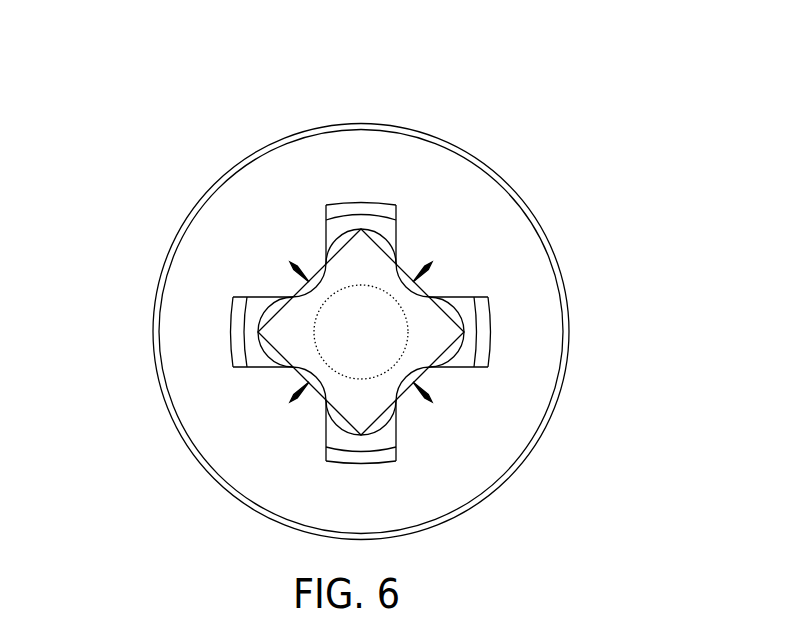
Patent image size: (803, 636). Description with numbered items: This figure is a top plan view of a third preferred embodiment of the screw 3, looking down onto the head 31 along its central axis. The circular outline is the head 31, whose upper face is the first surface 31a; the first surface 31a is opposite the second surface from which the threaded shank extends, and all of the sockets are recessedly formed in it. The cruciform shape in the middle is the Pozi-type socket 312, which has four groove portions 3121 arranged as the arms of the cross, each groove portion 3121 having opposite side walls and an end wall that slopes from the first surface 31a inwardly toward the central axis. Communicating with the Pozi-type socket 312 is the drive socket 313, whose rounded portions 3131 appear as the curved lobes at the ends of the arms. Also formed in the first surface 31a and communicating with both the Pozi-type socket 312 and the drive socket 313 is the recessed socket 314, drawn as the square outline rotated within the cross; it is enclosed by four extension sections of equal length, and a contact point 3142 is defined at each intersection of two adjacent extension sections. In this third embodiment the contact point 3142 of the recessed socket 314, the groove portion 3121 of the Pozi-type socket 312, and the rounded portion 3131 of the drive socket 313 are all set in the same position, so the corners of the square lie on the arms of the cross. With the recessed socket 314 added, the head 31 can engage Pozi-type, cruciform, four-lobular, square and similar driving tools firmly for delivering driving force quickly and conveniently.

The screw 3 is at (240, 118).
The head 31 is at (212, 182).
The first surface 31a is at (213, 257).
The Pozi-type socket 312 is at (373, 200).
The groove portion 3121 is at (490, 332).
The drive socket 313 is at (383, 235).
The rounded portion 3131 is at (463, 320).
The recessed socket 314 is at (405, 266).
The contact point 3142 is at (468, 343).